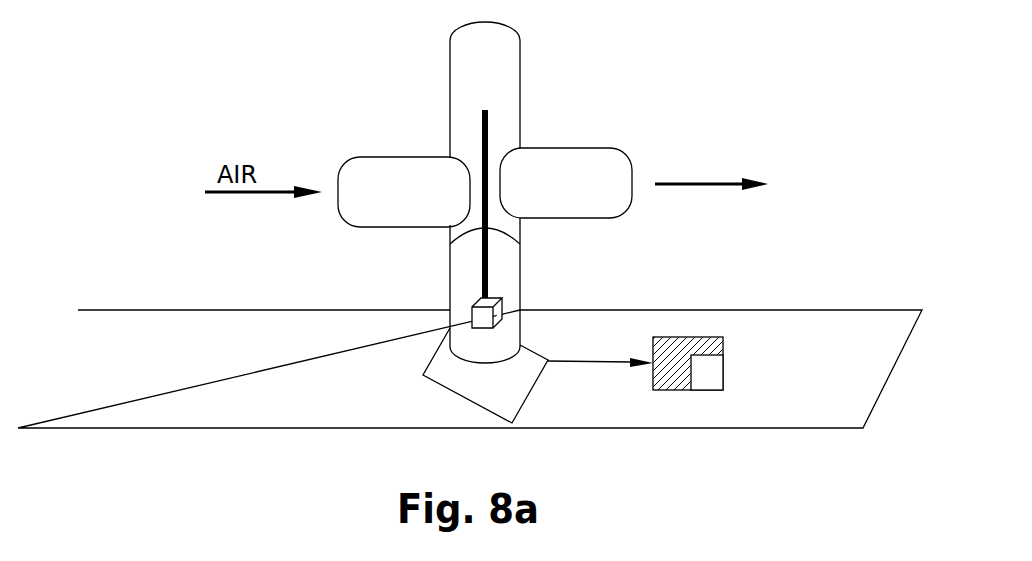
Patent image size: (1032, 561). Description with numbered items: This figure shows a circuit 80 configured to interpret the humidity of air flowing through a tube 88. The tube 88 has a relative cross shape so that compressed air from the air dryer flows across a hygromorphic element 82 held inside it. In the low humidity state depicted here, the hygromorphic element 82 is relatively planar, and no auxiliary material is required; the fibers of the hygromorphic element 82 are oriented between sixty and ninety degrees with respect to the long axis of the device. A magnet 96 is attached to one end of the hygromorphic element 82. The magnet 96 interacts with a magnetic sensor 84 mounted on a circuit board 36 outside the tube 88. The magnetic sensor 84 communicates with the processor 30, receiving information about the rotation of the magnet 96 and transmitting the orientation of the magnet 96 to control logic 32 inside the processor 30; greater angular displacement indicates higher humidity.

The processor 30 is at (692, 337).
The control logic 32 is at (713, 372).
The circuit board 36 is at (810, 310).
The circuit 80 is at (718, 106).
The hygromorphic element 82 is at (489, 137).
The magnetic sensor 84 is at (527, 397).
The tube 88 is at (521, 89).
The magnet 96 is at (500, 310).